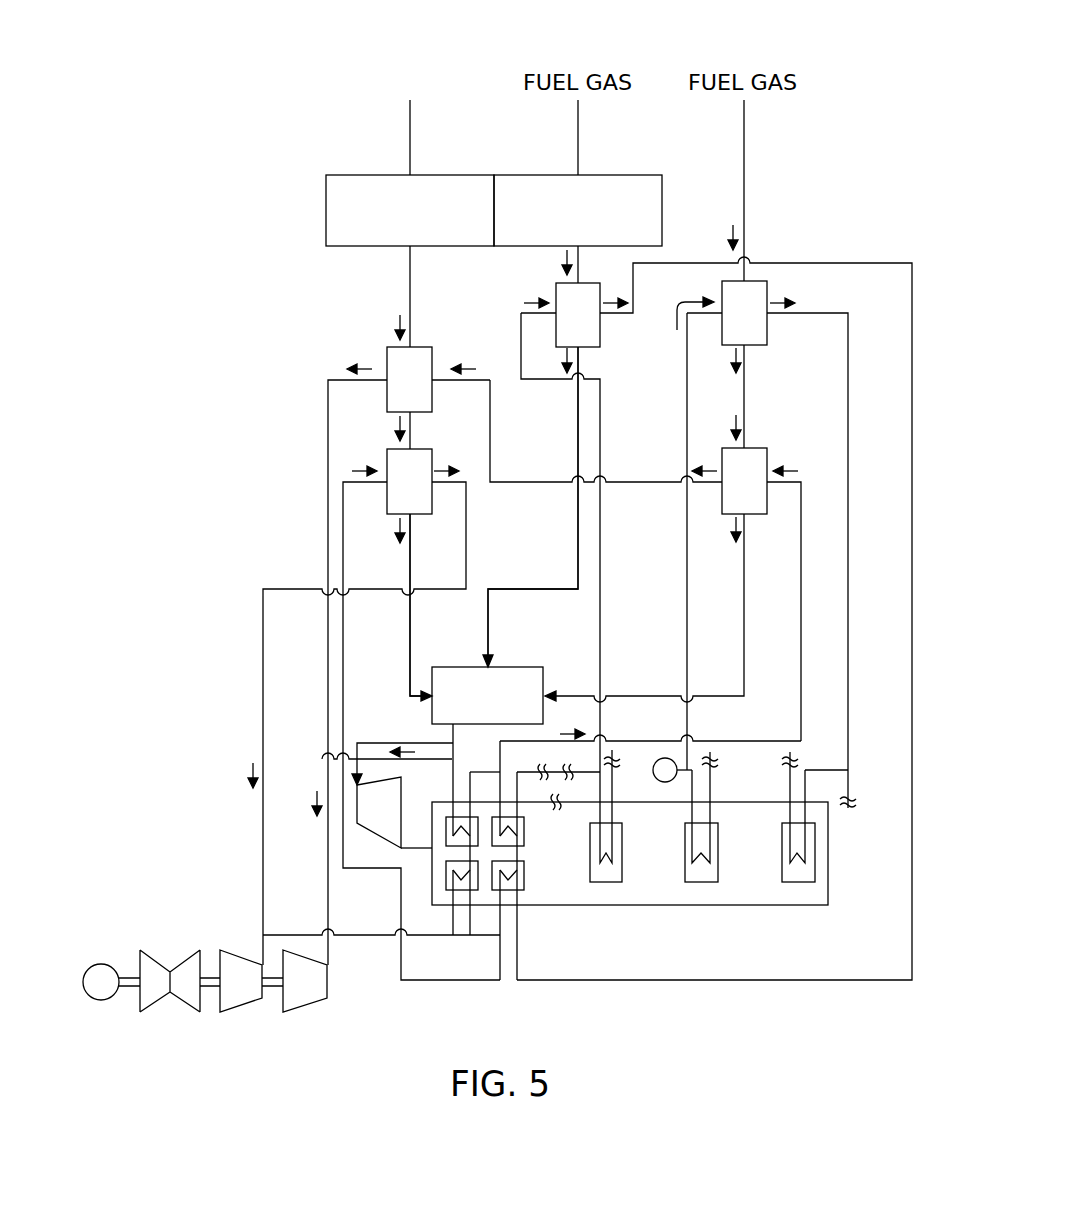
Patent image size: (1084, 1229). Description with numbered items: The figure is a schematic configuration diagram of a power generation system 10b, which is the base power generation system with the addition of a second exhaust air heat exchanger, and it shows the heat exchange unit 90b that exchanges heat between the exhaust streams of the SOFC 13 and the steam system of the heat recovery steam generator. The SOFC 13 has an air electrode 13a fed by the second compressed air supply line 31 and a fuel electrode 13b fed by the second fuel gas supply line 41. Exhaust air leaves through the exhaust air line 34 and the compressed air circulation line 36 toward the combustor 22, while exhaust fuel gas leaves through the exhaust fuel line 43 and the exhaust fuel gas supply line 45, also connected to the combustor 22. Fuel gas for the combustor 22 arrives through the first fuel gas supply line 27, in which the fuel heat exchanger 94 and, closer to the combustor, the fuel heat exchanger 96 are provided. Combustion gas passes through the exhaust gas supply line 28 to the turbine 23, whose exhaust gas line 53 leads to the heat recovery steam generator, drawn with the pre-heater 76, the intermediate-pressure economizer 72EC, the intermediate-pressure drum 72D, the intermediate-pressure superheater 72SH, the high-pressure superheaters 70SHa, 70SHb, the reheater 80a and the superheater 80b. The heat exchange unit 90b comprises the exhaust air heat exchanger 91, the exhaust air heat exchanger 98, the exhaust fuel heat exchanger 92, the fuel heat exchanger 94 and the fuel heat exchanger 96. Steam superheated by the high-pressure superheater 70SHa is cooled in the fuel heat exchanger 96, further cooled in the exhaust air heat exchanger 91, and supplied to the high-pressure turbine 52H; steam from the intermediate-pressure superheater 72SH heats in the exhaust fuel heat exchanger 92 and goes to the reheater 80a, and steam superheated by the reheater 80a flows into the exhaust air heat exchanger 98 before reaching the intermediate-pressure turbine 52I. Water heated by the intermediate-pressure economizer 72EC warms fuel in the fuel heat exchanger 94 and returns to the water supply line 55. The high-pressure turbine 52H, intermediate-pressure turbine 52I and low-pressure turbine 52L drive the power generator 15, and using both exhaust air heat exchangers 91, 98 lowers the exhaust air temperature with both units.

The power generation system 10b is at (318, 69).
The SOFC 13 is at (493, 176).
The air electrode 13a is at (326, 210).
The fuel electrode 13b is at (662, 210).
The second compressed air supply line 31 is at (410, 134).
The second fuel gas supply line 41 is at (578, 133).
The first fuel gas supply line 27 is at (744, 133).
The exhaust fuel heat exchanger 92 is at (596, 284).
The fuel heat exchanger 94 is at (765, 346).
The fuel heat exchanger 96 is at (764, 448).
The heat exchange unit 90b is at (374, 628).
The exhaust air heat exchanger 91 is at (429, 347).
The exhaust air heat exchanger 98 is at (429, 449).
The exhaust fuel line 43 is at (530, 507).
The exhaust fuel gas supply line 45 is at (576, 533).
The exhaust air line 34 is at (444, 607).
The compressed air circulation line 36 is at (415, 605).
The combustor 22 is at (513, 662).
The exhaust gas supply line 28 is at (378, 743).
The turbine 23 is at (401, 777).
The exhaust gas line 53 is at (417, 850).
The water supply line 55 is at (580, 842).
The high-pressure superheater 70SHb is at (446, 832).
The high-pressure superheater 70SHa is at (524, 832).
The superheater 80b is at (463, 890).
The reheater 80a is at (524, 875).
The intermediate-pressure superheater 72SH is at (620, 852).
The intermediate-pressure economizer 72EC is at (718, 852).
The pre-heater 76 is at (782, 836).
The intermediate-pressure drum 72D is at (665, 758).
The power generator 15 is at (101, 1000).
The low-pressure turbine 52L is at (185, 1012).
The intermediate-pressure turbine 52I is at (240, 1012).
The high-pressure turbine 52H is at (303, 1012).